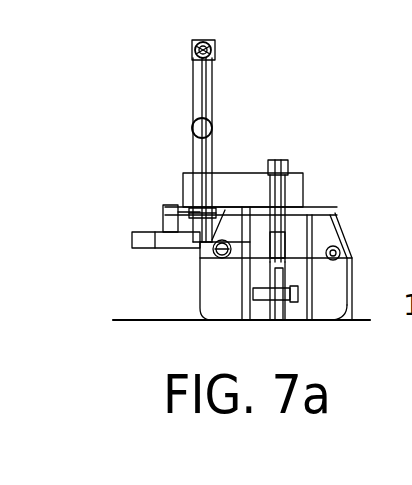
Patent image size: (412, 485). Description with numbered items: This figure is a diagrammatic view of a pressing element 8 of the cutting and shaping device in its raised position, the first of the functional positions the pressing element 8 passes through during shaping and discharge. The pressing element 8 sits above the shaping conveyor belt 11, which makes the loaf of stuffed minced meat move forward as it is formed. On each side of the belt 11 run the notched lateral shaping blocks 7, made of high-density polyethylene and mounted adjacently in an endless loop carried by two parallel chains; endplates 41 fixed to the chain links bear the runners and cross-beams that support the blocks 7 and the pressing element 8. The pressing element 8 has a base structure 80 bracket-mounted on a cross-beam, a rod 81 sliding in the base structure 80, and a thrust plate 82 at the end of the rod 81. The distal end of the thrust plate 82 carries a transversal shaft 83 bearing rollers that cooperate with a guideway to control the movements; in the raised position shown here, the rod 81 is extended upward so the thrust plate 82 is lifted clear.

The notched lateral shaping block 7 is at (343, 226).
The pressing element 8 is at (124, 154).
The shaping conveyor belt 11 is at (140, 318).
The endplate 41 is at (322, 212).
The base structure 80 is at (234, 184).
The rod 81 is at (205, 103).
The thrust plate 82 is at (147, 232).
The transversal shaft 83 is at (196, 58).